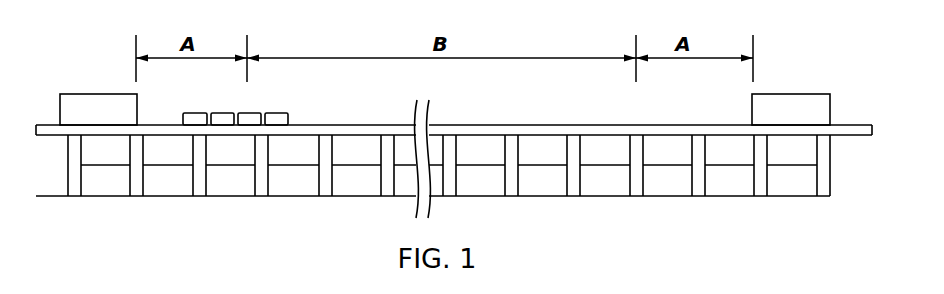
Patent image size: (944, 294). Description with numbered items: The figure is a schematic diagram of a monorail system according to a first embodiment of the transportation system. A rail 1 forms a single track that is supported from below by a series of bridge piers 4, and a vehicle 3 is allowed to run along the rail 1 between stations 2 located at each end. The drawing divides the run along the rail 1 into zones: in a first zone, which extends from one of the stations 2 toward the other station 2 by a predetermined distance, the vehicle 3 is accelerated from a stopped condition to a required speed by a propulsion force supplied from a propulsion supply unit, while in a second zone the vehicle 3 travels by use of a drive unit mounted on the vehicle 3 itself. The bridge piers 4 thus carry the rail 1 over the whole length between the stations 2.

The rail 1 is at (538, 128).
The station 2 is at (787, 108).
The vehicle 3 is at (275, 114).
The bridge pier 4 is at (260, 162).